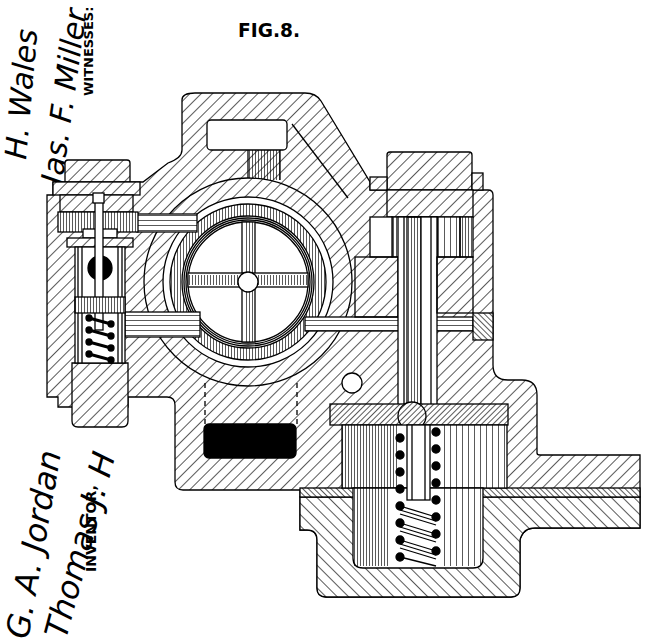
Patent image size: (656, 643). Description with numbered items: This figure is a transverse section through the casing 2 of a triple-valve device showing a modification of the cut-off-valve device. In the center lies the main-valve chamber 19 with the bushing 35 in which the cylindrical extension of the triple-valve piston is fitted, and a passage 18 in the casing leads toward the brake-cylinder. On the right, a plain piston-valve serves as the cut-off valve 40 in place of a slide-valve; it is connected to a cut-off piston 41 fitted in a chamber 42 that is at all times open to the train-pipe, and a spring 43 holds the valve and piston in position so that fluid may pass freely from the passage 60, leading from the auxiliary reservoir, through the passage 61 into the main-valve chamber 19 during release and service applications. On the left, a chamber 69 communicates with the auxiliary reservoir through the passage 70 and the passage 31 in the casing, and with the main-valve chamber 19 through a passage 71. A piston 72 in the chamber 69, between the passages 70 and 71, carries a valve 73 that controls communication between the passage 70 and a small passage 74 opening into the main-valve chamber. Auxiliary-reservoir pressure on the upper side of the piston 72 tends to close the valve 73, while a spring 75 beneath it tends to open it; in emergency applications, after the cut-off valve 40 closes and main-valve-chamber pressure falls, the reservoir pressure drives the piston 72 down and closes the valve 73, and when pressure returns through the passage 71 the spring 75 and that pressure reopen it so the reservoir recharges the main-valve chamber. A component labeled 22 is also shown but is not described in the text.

The casing 2 is at (176, 441).
The passage 31 is at (247, 135).
The main-valve chamber 19 is at (248, 282).
The small passage 74 is at (170, 222).
The passage 71 is at (155, 335).
The passage 61 is at (330, 331).
The valve 73 is at (90, 222).
The passage 70 is at (88, 268).
The chamber 69 is at (78, 288).
The piston 72 is at (83, 309).
The spring 75 is at (88, 347).
The port 22 is at (243, 426).
The passage 18 is at (352, 383).
The passage 60 is at (392, 236).
The bushing 35 is at (342, 284).
The cut-off valve 40 is at (392, 286).
The cut-off piston 41 is at (419, 485).
The chamber 42 is at (473, 495).
The spring 43 is at (437, 537).